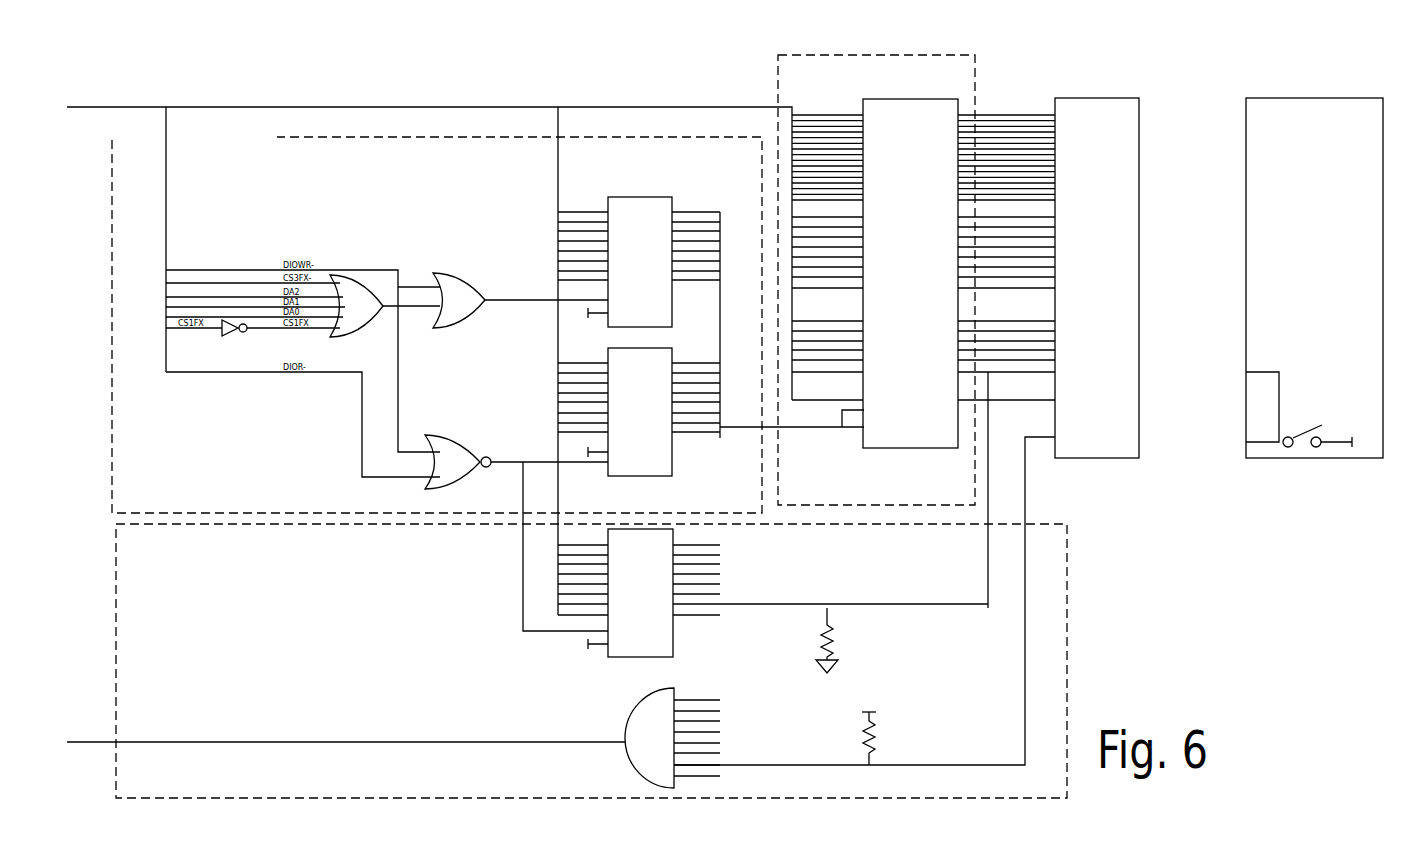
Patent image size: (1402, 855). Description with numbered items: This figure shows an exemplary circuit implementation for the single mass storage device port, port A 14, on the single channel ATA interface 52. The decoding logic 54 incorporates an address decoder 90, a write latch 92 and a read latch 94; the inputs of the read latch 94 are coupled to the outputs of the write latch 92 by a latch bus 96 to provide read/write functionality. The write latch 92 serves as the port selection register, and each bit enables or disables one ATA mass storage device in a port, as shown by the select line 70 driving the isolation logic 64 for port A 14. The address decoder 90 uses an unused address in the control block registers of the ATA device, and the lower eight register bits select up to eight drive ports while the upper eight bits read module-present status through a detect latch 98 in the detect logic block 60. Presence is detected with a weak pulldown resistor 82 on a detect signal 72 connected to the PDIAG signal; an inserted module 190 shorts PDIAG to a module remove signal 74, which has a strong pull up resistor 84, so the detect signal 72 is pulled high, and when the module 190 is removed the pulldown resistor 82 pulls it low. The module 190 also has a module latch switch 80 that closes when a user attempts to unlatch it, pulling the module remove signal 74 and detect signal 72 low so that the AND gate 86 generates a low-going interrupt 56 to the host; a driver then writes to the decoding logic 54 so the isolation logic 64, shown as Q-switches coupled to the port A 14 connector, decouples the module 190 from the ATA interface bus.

The port A 14 is at (1128, 108).
The single channel ATA interface 52 is at (448, 106).
The decoding logic 54 is at (416, 325).
The interrupt 56 is at (94, 740).
The detect logic block 60 is at (1045, 596).
The isolation logic 64 is at (945, 72).
The select line 70 is at (738, 425).
The detect signal 72 is at (987, 507).
The module remove signal 74 is at (1027, 505).
The module latch switch 80 is at (1305, 425).
The pulldown resistor 82 is at (838, 642).
The pull up resistor 84 is at (880, 740).
The AND gate 86 is at (655, 715).
The address decoder 90 is at (337, 428).
The write latch 92 is at (643, 205).
The read latch 94 is at (662, 463).
The latch bus 96 is at (722, 330).
The detect latch 98 is at (662, 645).
The module 190 is at (1336, 108).